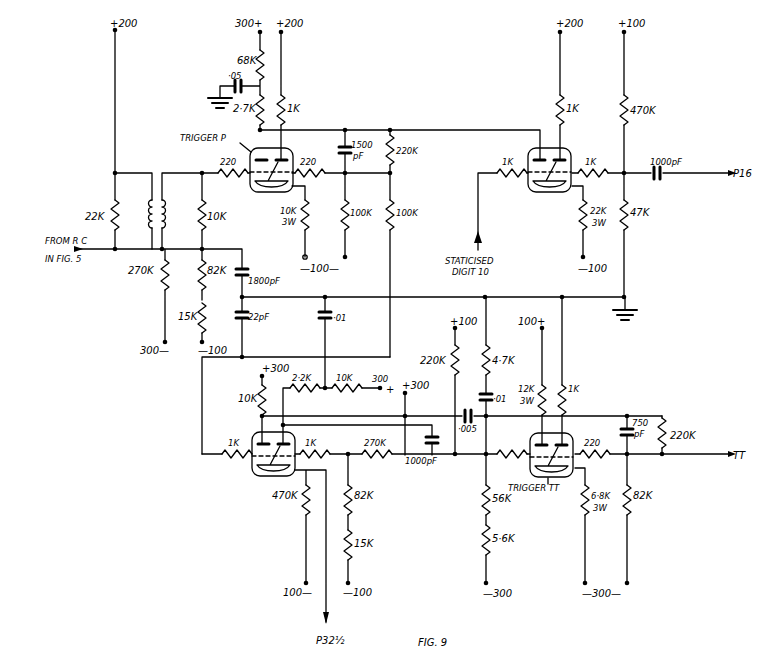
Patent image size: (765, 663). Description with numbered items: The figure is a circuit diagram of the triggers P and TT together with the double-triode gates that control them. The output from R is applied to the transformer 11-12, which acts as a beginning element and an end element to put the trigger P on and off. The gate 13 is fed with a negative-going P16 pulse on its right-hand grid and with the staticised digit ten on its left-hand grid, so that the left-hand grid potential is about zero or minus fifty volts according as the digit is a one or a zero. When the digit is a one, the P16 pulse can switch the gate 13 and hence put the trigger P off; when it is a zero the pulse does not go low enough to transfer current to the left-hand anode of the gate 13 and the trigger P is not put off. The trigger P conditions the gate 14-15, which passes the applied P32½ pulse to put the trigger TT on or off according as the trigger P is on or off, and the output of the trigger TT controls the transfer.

The transformer 11-12 is at (158, 202).
The gate 13 is at (562, 150).
The gate 14-15 is at (265, 476).
The trigger P is at (271, 170).
The trigger TT is at (551, 455).